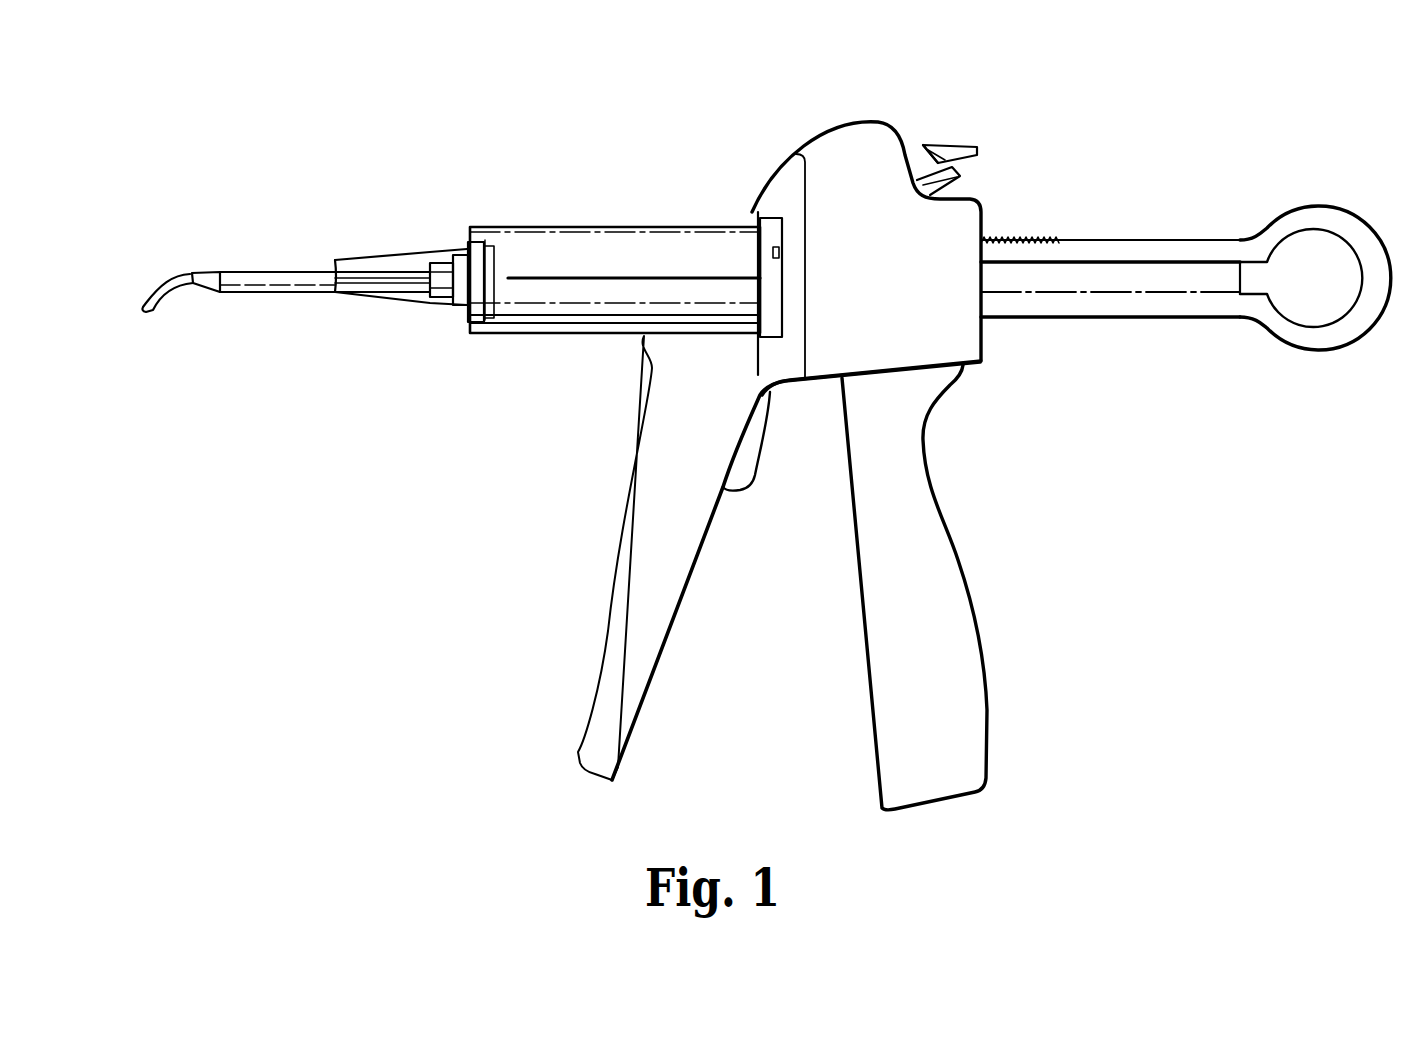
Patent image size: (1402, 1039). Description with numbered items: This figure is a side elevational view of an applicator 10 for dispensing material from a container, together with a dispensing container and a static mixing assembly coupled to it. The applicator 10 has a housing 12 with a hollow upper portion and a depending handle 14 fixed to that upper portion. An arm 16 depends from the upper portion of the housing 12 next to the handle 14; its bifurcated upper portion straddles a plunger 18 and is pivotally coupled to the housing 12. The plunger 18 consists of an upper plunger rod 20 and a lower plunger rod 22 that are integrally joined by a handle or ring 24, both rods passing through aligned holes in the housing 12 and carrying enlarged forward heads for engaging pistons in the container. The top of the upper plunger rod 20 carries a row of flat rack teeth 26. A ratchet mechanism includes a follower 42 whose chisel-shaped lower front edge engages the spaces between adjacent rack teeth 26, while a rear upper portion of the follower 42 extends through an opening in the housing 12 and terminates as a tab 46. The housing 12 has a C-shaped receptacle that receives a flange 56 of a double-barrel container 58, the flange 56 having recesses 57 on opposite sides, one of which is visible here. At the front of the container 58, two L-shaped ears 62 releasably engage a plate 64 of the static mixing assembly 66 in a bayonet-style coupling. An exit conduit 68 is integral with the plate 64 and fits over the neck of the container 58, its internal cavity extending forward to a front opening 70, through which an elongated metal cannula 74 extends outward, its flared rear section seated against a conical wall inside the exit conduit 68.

The applicator 10 is at (1047, 111).
The housing 12 is at (948, 325).
The handle 14 is at (612, 672).
The arm 16 is at (955, 627).
The plunger 18 is at (1279, 208).
The upper plunger rod 20 is at (1175, 250).
The lower plunger rod 22 is at (1180, 305).
The ring 24 is at (1372, 290).
The rack teeth 26 is at (1030, 240).
The follower 42 is at (940, 182).
The tab 46 is at (952, 147).
The flange 56 is at (772, 228).
The recess 57 is at (776, 252).
The container 58 is at (584, 250).
The ears 62 is at (470, 243).
The plate 64 is at (497, 312).
The static mixing assembly 66 is at (260, 273).
The exit conduit 68 is at (290, 270).
The front opening 70 is at (190, 274).
The cannula 74 is at (153, 311).